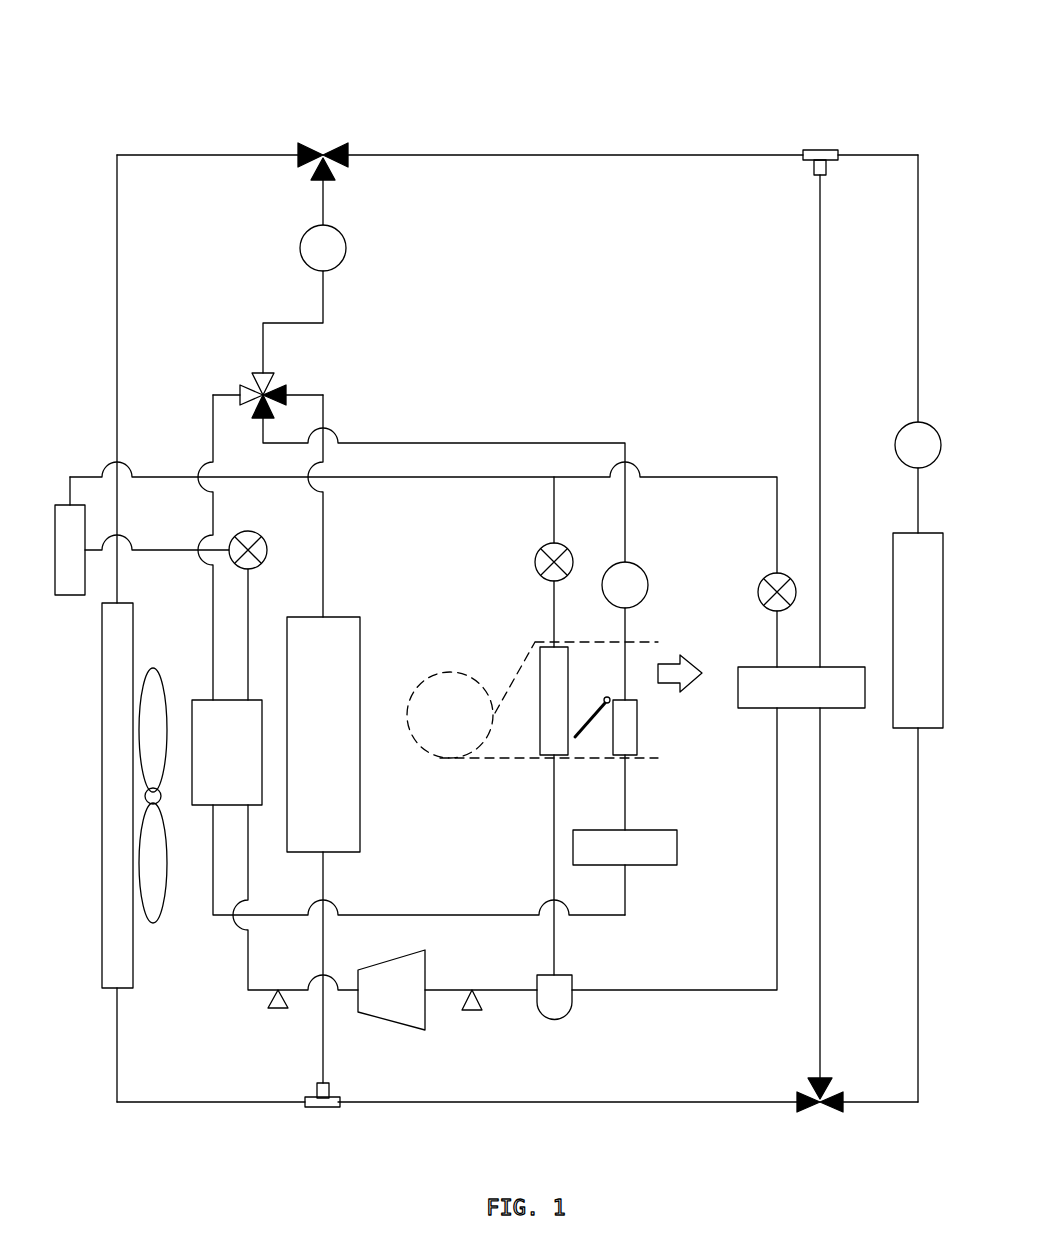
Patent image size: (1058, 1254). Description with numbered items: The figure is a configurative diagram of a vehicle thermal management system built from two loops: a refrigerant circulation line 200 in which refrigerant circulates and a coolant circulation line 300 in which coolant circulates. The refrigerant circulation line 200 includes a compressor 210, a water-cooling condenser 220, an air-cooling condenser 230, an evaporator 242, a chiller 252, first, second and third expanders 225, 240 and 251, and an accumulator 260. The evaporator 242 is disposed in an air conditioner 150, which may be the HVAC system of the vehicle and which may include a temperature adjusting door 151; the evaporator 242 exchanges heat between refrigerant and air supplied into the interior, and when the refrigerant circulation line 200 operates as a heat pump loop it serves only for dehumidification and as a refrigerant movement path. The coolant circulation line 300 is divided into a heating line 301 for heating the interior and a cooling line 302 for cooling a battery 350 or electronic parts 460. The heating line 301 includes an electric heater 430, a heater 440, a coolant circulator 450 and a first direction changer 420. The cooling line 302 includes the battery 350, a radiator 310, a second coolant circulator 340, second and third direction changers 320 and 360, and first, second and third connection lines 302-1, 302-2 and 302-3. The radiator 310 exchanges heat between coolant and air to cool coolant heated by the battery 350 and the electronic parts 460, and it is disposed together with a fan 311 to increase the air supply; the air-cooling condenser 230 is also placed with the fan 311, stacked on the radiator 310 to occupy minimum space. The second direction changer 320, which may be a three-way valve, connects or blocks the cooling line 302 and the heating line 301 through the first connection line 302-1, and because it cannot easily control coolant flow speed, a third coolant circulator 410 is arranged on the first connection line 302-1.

The coolant circulation line 300 is at (542, 50).
The heating line 301 is at (553, 432).
The cooling line 302 is at (513, 148).
The first connection line 302-1 is at (342, 297).
The second connection line 302-2 is at (342, 515).
The third connection line 302-3 is at (803, 293).
The second direction changer 320 is at (326, 153).
The third coolant circulator 410 is at (347, 252).
The first direction changer 420 is at (237, 355).
The second coolant circulator 340 is at (901, 423).
The battery 350 is at (893, 564).
The third direction changer 360 is at (826, 1113).
The refrigerant circulation line 200 is at (426, 462).
The first expander 225 is at (252, 538).
The second expander 240 is at (535, 562).
The coolant circulator 450 is at (645, 574).
The third expander 251 is at (766, 607).
The chiller 252 is at (840, 712).
The air-cooling condenser 230 is at (72, 600).
The radiator 310 is at (133, 633).
The fan 311 is at (152, 925).
The water-cooling condenser 220 is at (210, 805).
The electronic parts 460 is at (360, 805).
The evaporator 242 is at (540, 672).
The air conditioner 150 is at (490, 760).
The temperature adjusting door 151 is at (597, 742).
The heater 440 is at (637, 742).
The electric heater 430 is at (655, 870).
The compressor 210 is at (390, 1032).
The accumulator 260 is at (560, 1022).